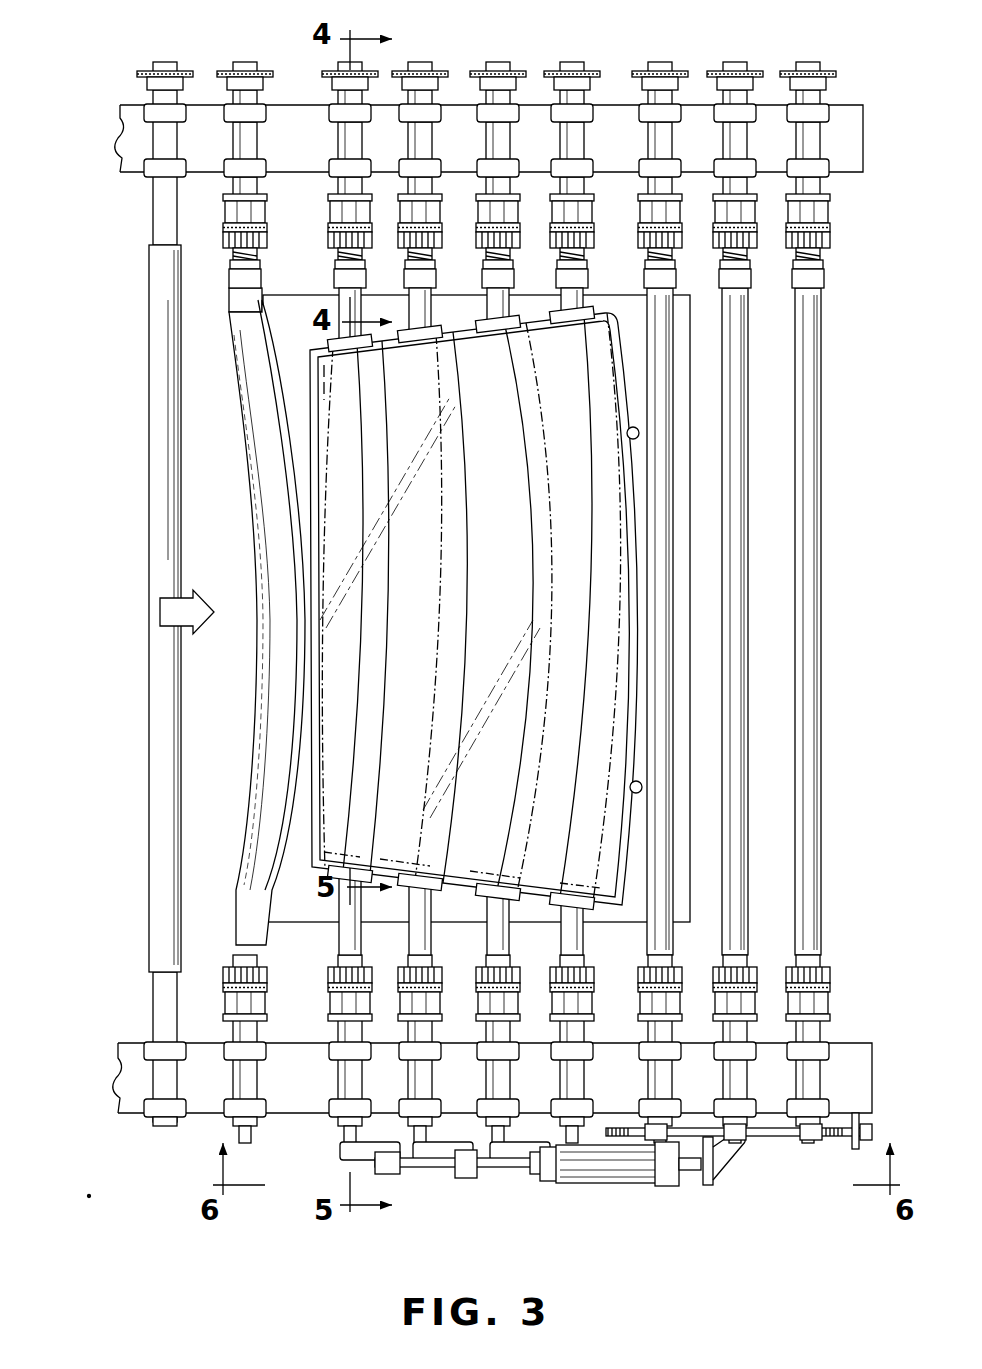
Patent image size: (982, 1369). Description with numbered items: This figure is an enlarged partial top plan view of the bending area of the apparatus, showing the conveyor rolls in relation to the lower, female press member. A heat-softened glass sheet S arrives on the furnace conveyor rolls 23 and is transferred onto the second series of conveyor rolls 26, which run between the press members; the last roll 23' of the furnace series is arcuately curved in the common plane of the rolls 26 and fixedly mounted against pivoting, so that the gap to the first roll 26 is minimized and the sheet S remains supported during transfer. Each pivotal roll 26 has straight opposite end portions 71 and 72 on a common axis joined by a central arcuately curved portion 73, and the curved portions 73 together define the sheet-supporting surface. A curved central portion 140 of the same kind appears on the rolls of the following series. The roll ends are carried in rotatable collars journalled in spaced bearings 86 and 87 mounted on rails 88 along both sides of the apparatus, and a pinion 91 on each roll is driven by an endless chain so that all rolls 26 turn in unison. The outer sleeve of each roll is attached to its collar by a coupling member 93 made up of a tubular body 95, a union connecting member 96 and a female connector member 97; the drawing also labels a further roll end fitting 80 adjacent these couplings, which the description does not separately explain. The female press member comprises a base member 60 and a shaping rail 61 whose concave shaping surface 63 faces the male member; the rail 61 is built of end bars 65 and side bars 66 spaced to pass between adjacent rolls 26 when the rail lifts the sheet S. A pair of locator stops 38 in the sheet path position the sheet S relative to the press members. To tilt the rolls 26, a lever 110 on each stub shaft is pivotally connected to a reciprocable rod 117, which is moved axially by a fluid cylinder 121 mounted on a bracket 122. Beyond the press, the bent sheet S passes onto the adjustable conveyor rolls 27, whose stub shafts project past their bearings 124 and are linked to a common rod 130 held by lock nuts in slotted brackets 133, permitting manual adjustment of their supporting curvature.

The conveyor rolls 23 is at (140, 594).
The last roll 23' is at (225, 334).
The conveyor rolls 26 is at (338, 290).
The conveyor rolls 27 is at (668, 620).
The locator stops 38 is at (640, 434).
The base member 60 is at (682, 342).
The shaping rail 61 is at (310, 828).
The shaping surface 63 is at (372, 862).
The end bars 65 is at (312, 740).
The side bars 66 is at (384, 342).
The straight end portion 71 is at (340, 345).
The straight end portion 72 is at (343, 920).
The curved portion 73 is at (382, 612).
The coupling collar 80 is at (343, 272).
The bearing 86 is at (345, 168).
The bearing 87 is at (334, 1105).
The rails 88 is at (128, 128).
The pinion 91 is at (378, 72).
The coupling members 93 is at (343, 225).
The tubular body 95 is at (410, 1005).
The union connecting member 96 is at (332, 992).
The female connector member 97 is at (410, 972).
The lever 110 is at (340, 1151).
The reciprocable rod 117 is at (445, 1180).
The fluid cylinder 121 is at (650, 1186).
The bracket 122 is at (708, 1187).
The bearing 124 is at (836, 1112).
The rod 130 is at (768, 1136).
The bracket 133 is at (866, 1122).
The curved central portion 140 is at (278, 560).
The glass sheet S is at (340, 630).